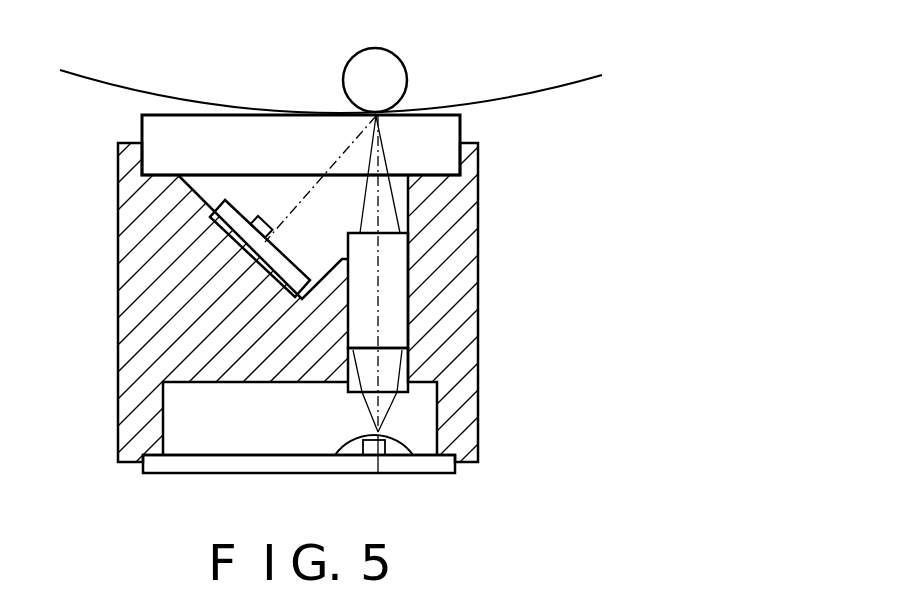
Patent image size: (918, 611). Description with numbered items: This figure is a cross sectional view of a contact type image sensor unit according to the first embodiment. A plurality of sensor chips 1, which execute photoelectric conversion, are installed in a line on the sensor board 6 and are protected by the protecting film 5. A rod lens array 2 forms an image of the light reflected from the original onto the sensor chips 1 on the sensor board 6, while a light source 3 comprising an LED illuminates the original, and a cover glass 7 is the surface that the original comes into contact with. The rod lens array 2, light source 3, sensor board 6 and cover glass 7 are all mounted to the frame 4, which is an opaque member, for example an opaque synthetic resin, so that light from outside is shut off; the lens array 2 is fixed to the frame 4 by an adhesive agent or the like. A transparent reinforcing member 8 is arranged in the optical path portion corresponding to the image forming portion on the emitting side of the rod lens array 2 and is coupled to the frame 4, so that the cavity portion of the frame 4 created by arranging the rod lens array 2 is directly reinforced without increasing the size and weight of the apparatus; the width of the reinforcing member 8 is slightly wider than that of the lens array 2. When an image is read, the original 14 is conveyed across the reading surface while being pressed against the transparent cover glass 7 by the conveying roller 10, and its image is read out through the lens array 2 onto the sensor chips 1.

The sensor chip 1 is at (400, 436).
The rod lens array 2 is at (398, 287).
The light source 3 is at (240, 212).
The frame 4 is at (123, 217).
The protecting film 5 is at (337, 438).
The sensor board 6 is at (230, 458).
The cover glass 7 is at (274, 138).
The transparent reinforcing member 8 is at (408, 363).
The conveying roller 10 is at (386, 72).
The original 14 is at (553, 90).